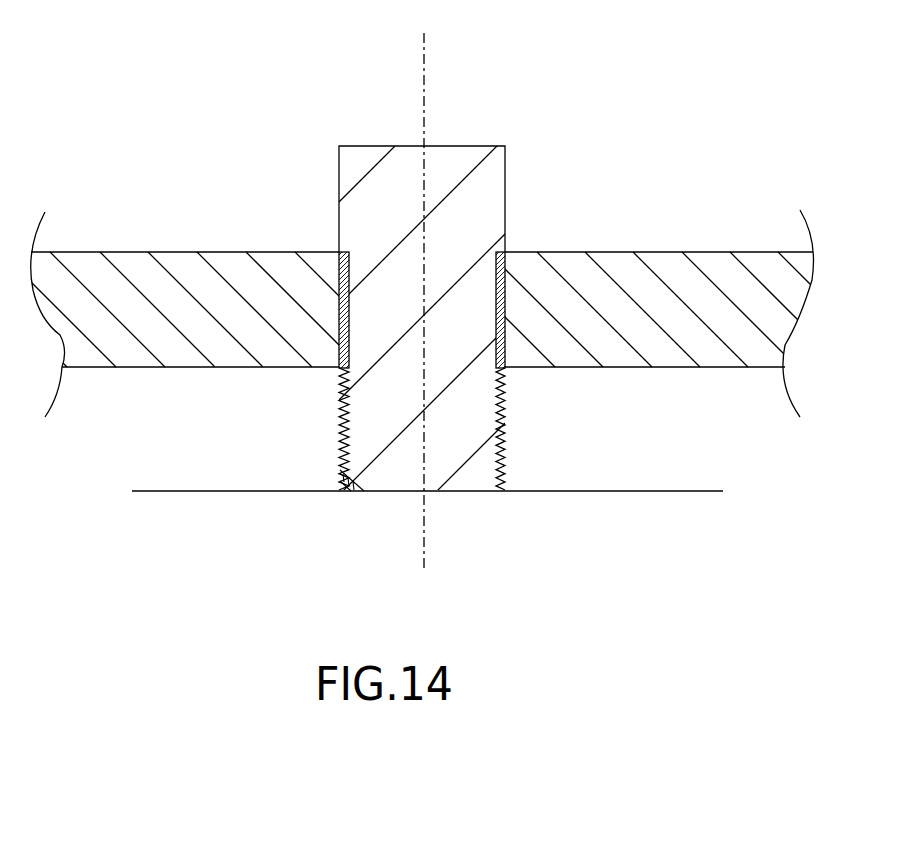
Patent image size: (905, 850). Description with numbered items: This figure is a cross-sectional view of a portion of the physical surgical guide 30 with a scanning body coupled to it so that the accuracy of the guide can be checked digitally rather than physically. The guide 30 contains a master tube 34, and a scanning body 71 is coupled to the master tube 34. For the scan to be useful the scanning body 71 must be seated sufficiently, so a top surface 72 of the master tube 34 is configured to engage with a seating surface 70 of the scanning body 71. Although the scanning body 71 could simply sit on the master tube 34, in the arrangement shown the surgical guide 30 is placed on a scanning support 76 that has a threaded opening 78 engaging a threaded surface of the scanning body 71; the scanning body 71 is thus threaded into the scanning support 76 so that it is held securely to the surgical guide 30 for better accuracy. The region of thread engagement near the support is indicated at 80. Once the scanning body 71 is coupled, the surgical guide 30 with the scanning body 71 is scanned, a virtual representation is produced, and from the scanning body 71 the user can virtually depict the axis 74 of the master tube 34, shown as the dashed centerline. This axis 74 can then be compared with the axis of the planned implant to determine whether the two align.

The physical surgical guide 30 is at (105, 252).
The master tube 34 is at (340, 368).
The seating surface 70 is at (500, 255).
The scanning body 71 is at (339, 165).
The top surface 72 is at (340, 252).
The axis 74 is at (425, 77).
The scanning support 76 is at (632, 491).
The threaded opening 78 is at (350, 480).
The thread engagement region 80 is at (500, 432).